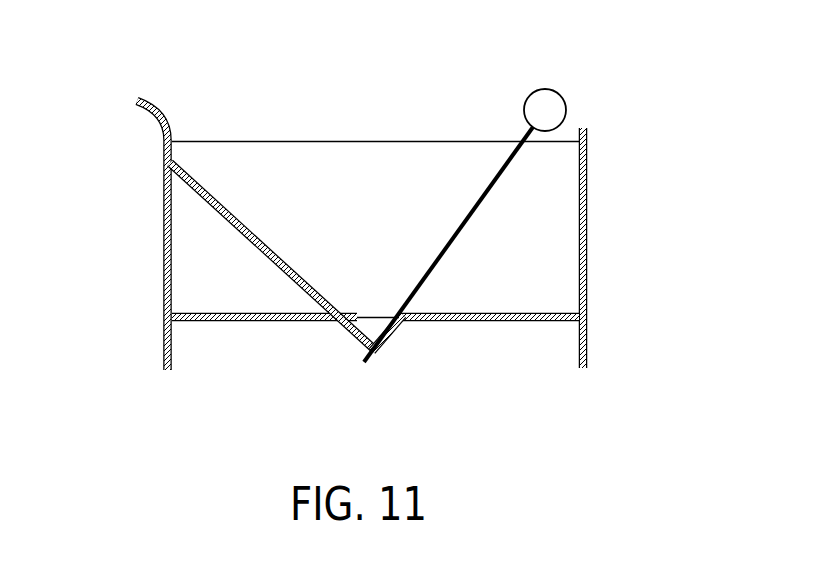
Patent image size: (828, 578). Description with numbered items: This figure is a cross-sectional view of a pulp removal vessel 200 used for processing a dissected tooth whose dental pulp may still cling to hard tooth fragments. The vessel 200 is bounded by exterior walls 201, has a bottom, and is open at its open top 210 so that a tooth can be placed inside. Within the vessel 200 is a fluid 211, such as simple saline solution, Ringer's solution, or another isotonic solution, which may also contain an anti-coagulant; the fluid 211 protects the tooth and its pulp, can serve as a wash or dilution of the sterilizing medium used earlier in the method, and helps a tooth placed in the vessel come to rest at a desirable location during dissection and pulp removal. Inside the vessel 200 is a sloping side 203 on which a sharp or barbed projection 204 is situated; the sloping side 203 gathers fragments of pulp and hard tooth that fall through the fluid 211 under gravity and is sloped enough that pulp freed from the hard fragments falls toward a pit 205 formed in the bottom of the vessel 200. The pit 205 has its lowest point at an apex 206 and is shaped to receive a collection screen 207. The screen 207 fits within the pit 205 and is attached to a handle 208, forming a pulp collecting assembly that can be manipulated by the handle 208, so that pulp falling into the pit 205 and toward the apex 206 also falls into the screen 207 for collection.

The pulp removal vessel 200 is at (380, 247).
The exterior walls 201 is at (588, 153).
The sloping side 203 is at (226, 218).
The sharp or barbed projection 204 is at (262, 238).
The pit 205 is at (353, 332).
The apex 206 is at (375, 353).
The collection screen 207 is at (372, 325).
The handle 208 is at (437, 263).
The open top 210 is at (183, 117).
The fluid 211 is at (550, 282).